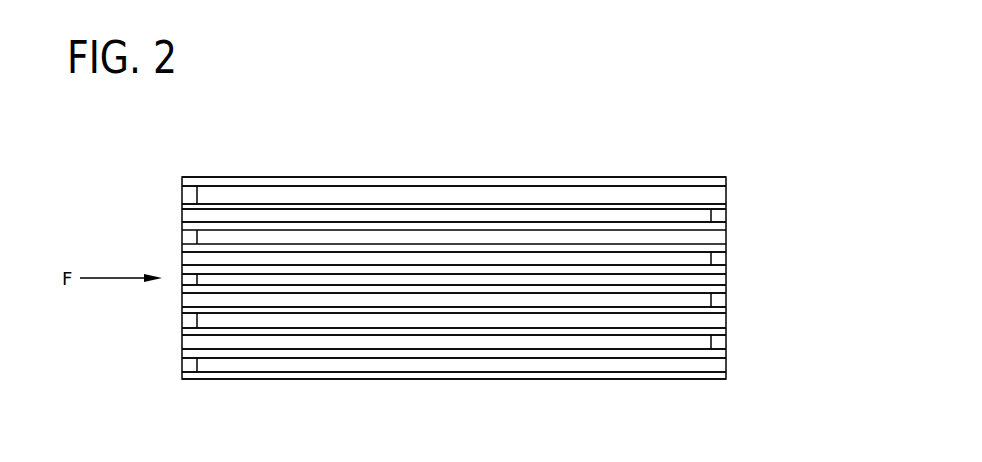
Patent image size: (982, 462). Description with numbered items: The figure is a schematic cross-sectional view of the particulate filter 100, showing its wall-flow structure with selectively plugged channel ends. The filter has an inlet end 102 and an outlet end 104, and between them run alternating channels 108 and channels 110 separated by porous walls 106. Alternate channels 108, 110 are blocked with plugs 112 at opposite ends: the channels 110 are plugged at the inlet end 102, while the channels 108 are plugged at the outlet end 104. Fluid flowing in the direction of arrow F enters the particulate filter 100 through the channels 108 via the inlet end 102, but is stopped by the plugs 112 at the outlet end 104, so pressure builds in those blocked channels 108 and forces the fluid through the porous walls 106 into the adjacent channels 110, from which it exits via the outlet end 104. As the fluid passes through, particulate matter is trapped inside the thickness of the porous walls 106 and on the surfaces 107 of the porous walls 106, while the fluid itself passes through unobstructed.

The particulate filter 100 is at (693, 107).
The inlet end 102 is at (182, 205).
The outlet end 104 is at (727, 363).
The porous walls 106 is at (415, 247).
The surfaces 107 is at (573, 223).
The channels 108 is at (383, 260).
The channels 110 is at (270, 280).
The plugs 112 is at (190, 280).